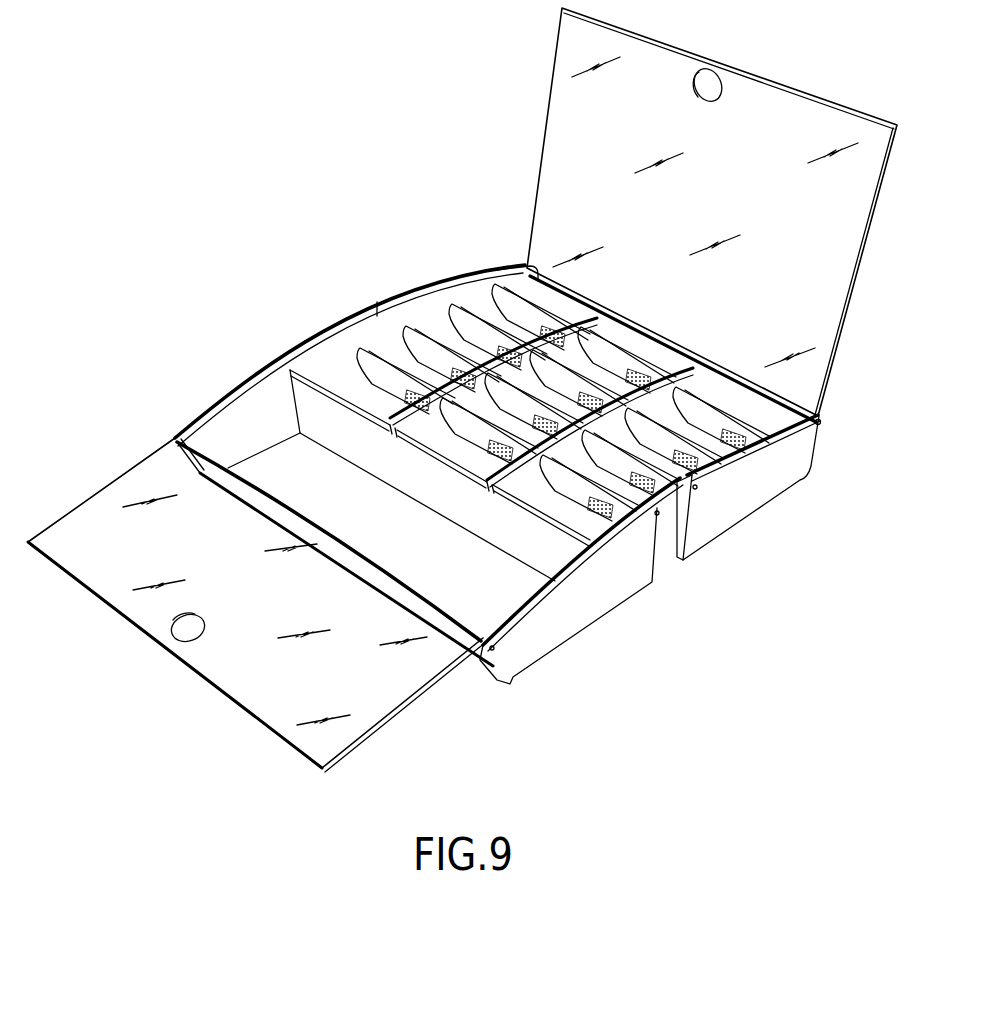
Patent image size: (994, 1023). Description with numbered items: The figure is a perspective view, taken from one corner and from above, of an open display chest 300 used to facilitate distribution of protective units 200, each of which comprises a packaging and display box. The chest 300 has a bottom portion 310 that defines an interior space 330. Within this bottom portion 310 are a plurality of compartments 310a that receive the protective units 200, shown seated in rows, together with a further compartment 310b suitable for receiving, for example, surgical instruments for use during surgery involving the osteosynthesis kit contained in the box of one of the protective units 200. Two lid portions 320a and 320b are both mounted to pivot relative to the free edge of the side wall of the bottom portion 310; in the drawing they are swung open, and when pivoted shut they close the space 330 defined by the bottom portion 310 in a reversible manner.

The chest 300 is at (462, 390).
The bottom portion 310 is at (495, 482).
The compartments 310a is at (393, 334).
The compartment 310b is at (466, 592).
The lid portion 320a is at (546, 138).
The lid portion 320b is at (103, 507).
The space 330 is at (535, 556).
The protective units 200 is at (430, 326).